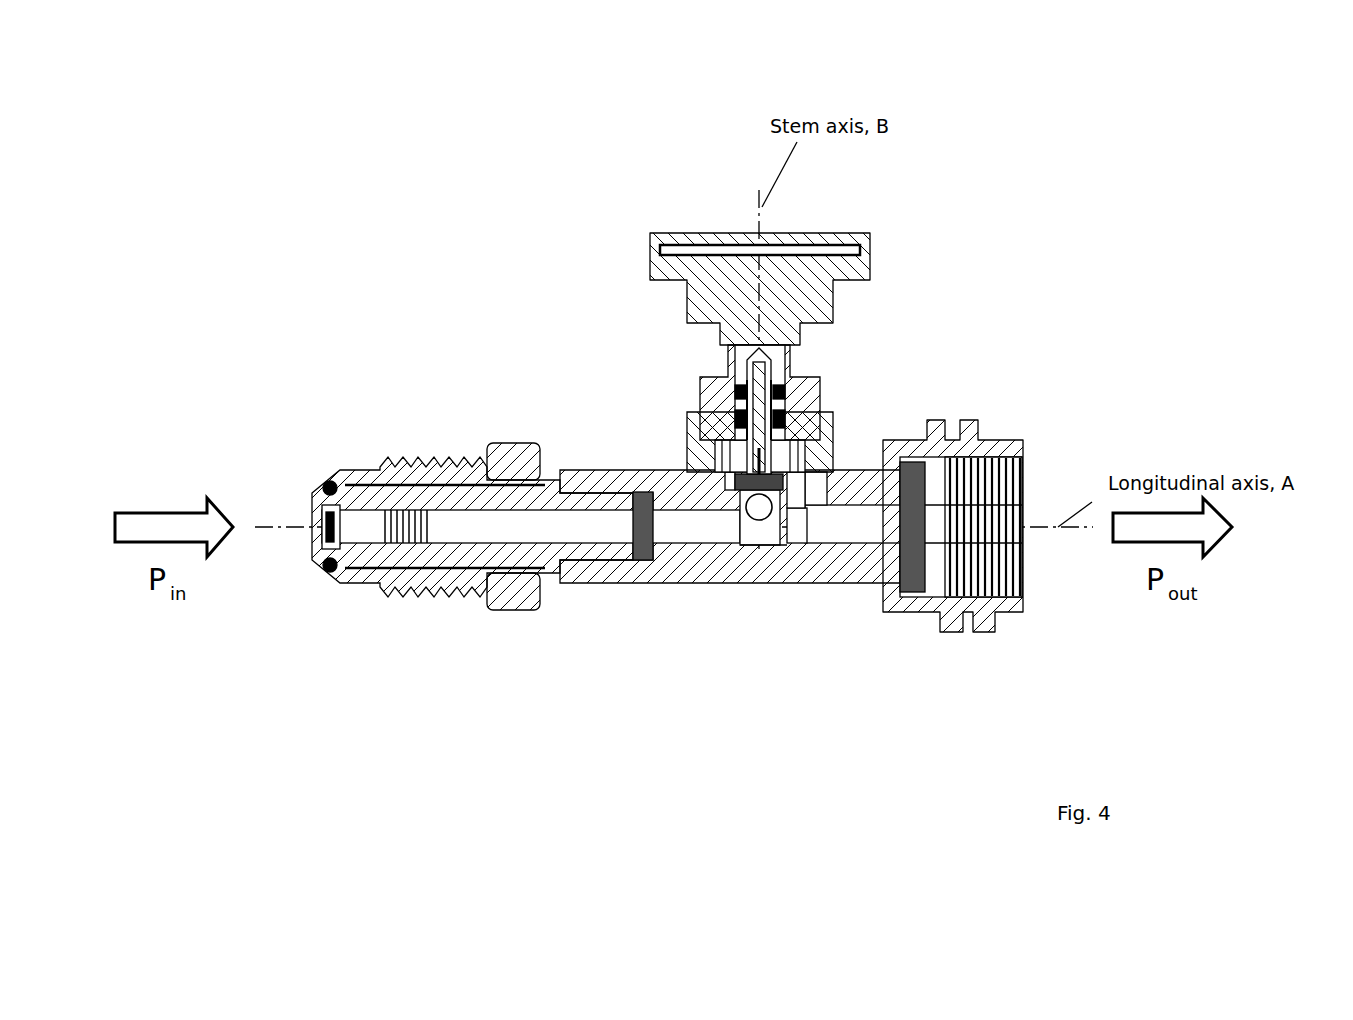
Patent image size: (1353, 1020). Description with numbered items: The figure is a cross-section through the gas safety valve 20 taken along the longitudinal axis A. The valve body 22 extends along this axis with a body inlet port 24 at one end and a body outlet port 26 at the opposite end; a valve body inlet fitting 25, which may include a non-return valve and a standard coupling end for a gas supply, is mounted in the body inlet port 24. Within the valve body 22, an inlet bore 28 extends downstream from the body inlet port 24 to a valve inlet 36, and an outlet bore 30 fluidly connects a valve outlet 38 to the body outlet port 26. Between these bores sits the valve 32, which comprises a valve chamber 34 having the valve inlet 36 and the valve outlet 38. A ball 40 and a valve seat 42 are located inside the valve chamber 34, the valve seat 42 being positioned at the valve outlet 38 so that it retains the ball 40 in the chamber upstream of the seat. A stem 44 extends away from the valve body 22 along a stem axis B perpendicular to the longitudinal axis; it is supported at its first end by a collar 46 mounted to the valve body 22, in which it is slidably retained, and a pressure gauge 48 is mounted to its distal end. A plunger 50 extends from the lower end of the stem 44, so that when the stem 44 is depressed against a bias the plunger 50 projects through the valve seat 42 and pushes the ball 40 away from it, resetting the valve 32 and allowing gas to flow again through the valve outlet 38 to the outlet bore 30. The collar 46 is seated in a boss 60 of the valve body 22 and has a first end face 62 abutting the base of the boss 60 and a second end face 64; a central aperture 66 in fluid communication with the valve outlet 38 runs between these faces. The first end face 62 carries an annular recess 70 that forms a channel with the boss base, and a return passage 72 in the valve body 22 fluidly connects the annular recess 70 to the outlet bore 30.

The gas safety valve 20 is at (1060, 105).
The valve body 22 is at (680, 482).
The body inlet port 24 is at (643, 548).
The valve body inlet fitting 25 is at (500, 460).
The body outlet port 26 is at (997, 447).
The inlet bore 28 is at (667, 538).
The outlet bore 30 is at (843, 502).
The valve 32 is at (786, 520).
The valve chamber 34 is at (772, 520).
The valve inlet 36 is at (757, 522).
The valve outlet 38 is at (771, 475).
The ball 40 is at (761, 522).
The valve seat 42 is at (797, 485).
The stem 44 is at (712, 360).
The collar 46 is at (700, 377).
The pressure gauge 48 is at (675, 245).
The plunger 50 is at (788, 402).
The boss 60 is at (693, 437).
The first end face 62 is at (727, 472).
The second end face 64 is at (795, 355).
The central aperture 66 is at (745, 455).
The annular recess 70 is at (717, 470).
The return passage 72 is at (812, 482).